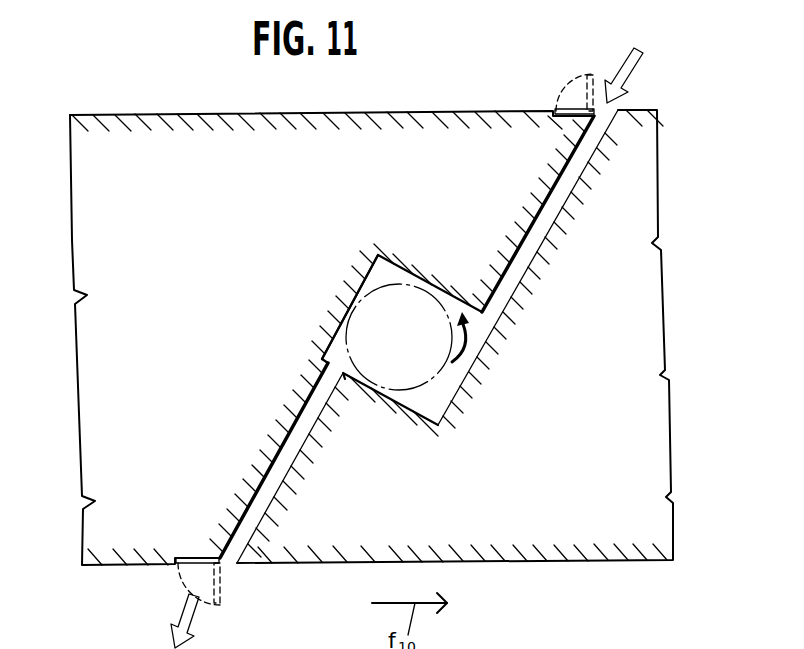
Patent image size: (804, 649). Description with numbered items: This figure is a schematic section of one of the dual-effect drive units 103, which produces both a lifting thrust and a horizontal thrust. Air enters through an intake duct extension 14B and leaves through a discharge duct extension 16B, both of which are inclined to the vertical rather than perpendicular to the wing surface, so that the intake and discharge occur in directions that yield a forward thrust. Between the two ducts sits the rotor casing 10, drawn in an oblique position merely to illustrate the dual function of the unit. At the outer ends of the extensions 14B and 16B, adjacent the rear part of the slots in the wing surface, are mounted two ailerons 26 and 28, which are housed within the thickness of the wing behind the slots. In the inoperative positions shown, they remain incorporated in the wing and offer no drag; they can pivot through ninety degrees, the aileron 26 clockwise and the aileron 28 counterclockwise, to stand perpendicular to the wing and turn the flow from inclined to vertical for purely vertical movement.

The aileron 26 is at (573, 109).
The intake duct extension 14B is at (518, 231).
The rotor casing 10 is at (355, 296).
The drive unit 103 is at (334, 322).
The discharge duct extension 16B is at (286, 461).
The aileron 28 is at (205, 564).